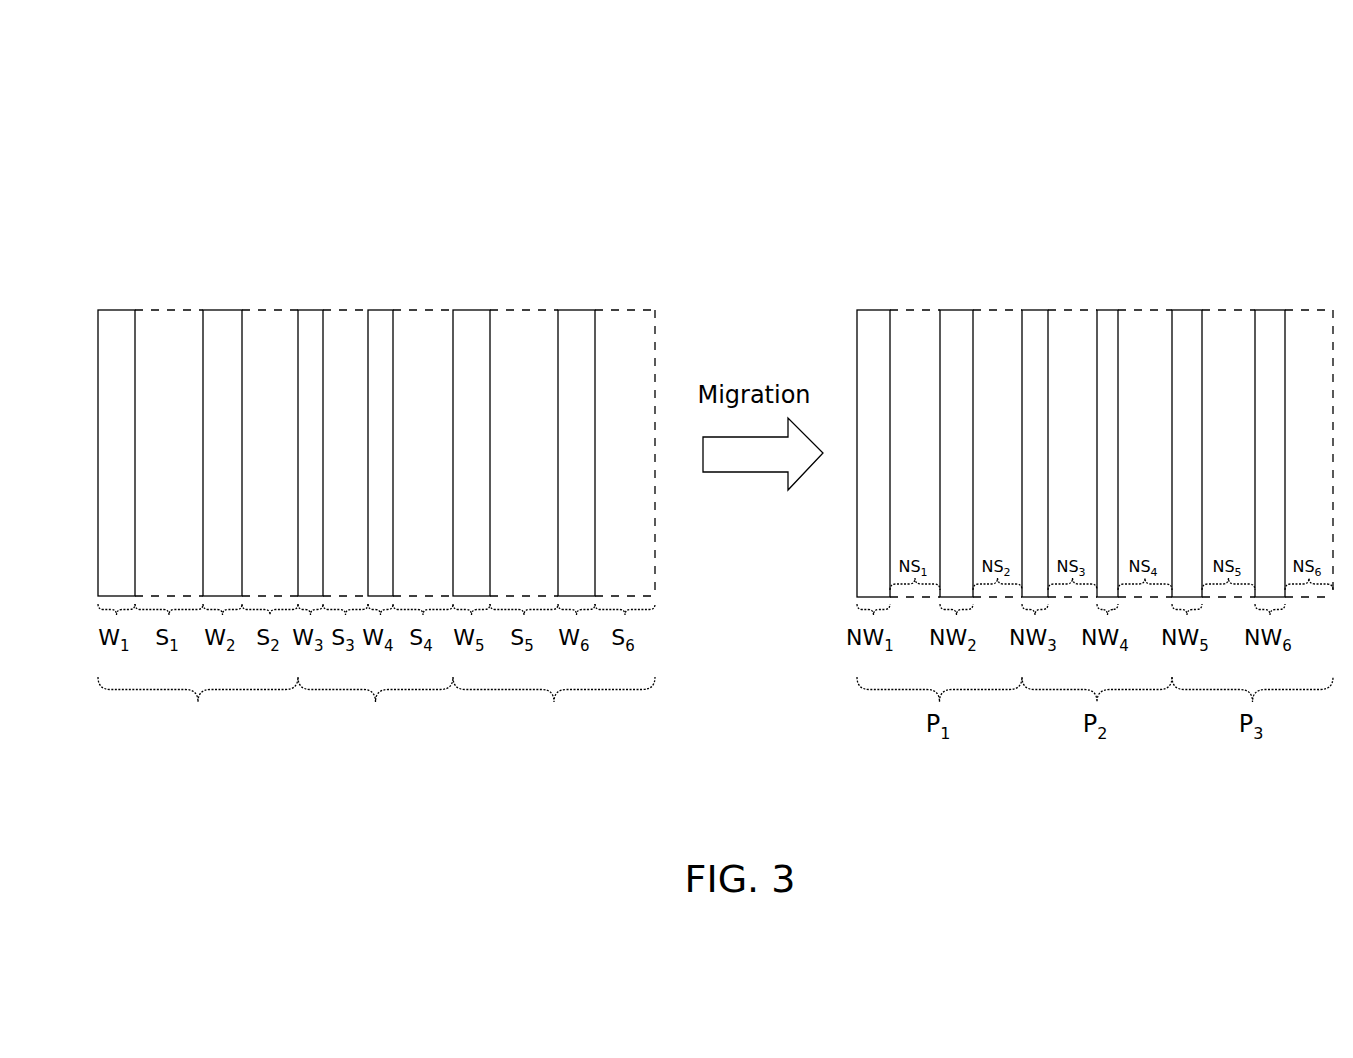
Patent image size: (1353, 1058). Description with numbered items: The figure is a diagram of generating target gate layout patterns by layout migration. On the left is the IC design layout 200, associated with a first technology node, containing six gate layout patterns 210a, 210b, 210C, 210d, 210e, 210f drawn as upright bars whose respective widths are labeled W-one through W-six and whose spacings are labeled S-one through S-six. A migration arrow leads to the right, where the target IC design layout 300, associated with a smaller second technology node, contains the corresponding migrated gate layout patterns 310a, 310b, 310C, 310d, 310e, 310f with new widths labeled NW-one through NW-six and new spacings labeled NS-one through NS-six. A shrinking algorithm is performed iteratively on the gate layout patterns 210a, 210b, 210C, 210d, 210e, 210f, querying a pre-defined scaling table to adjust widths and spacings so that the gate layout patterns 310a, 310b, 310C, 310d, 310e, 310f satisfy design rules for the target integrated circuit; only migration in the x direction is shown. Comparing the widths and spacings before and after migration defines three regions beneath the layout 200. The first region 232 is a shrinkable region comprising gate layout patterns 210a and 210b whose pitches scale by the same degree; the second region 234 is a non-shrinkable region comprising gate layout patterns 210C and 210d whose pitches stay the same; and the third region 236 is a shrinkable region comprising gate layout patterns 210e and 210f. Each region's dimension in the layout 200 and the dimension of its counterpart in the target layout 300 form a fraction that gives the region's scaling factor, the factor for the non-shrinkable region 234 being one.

The IC design layout 200 is at (568, 147).
The target IC design layout 300 is at (1243, 147).
The gate layout pattern 210a is at (112, 328).
The gate layout pattern 210b is at (218, 328).
The gate layout pattern 210C is at (307, 328).
The gate layout pattern 210d is at (377, 328).
The gate layout pattern 210e is at (469, 328).
The gate layout pattern 210f is at (573, 328).
The gate layout pattern 310a is at (869, 328).
The gate layout pattern 310b is at (954, 328).
The gate layout pattern 310C is at (1032, 328).
The gate layout pattern 310d is at (1104, 328).
The gate layout pattern 310e is at (1184, 328).
The gate layout pattern 310f is at (1267, 328).
The first region 232 is at (198, 741).
The second region 234 is at (375, 741).
The third region 236 is at (554, 741).